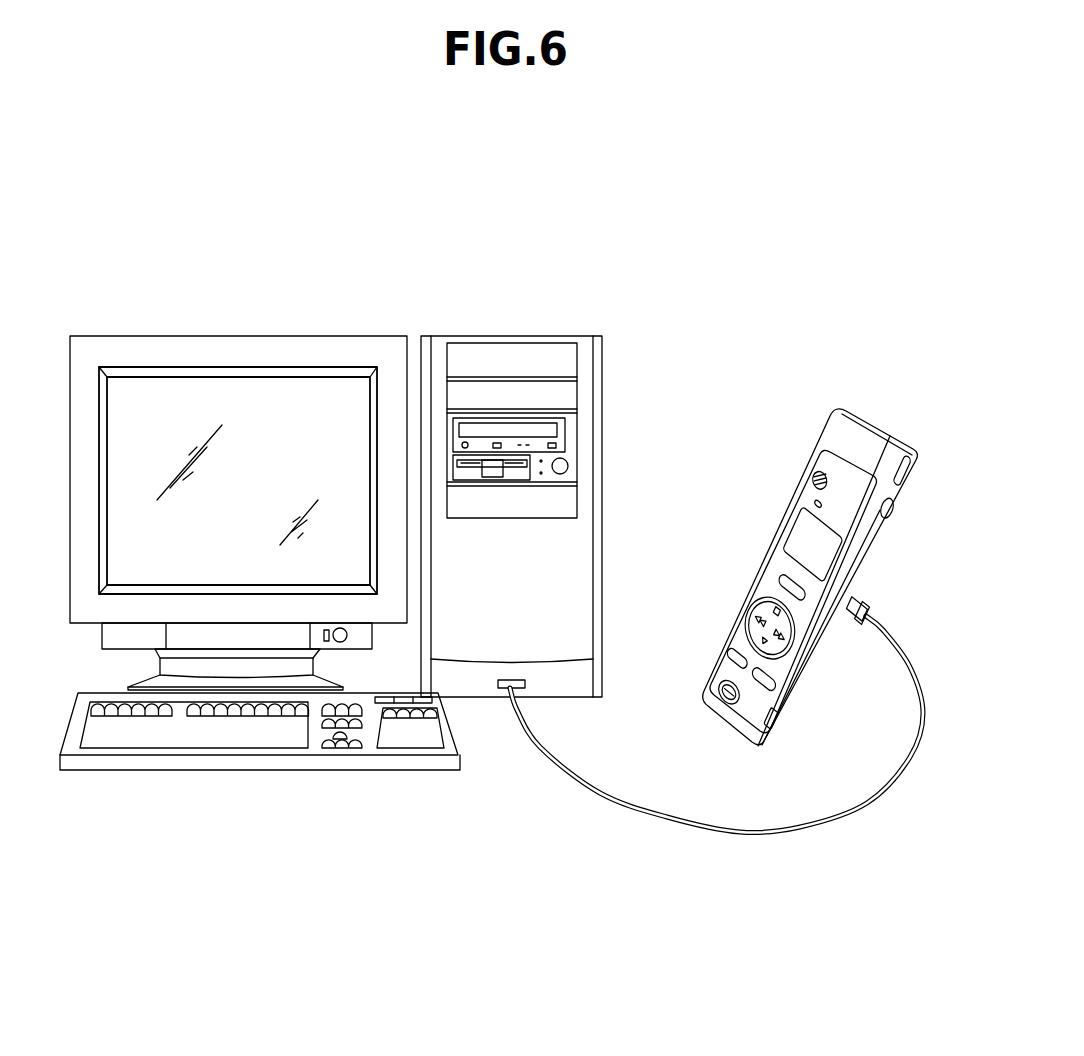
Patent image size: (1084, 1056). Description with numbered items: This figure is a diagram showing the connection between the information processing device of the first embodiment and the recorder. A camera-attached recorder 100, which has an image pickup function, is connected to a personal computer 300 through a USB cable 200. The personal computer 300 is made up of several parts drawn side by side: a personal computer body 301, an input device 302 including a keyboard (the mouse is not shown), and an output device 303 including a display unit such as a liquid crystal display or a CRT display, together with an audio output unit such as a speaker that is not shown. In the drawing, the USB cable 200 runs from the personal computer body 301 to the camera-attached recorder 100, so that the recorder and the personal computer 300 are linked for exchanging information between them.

The camera-attached recorder 100 is at (877, 533).
The USB cable 200 is at (783, 830).
The personal computer 300 is at (603, 852).
The personal computer body 301 is at (587, 478).
The input device 302 is at (173, 762).
The output device 303 is at (265, 350).